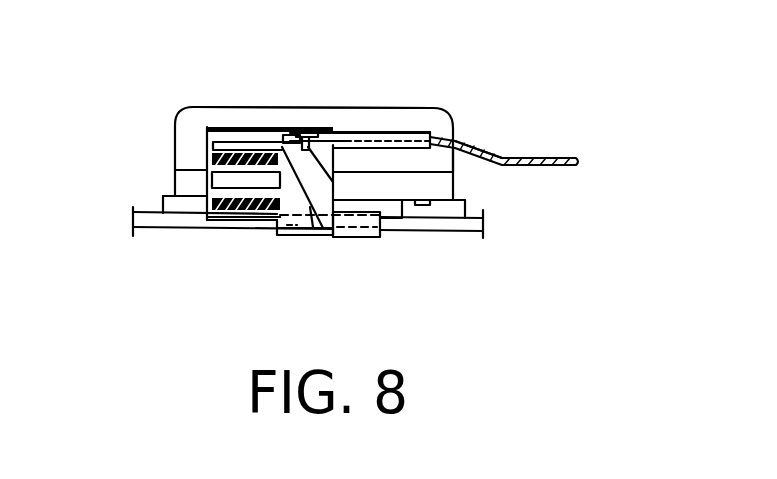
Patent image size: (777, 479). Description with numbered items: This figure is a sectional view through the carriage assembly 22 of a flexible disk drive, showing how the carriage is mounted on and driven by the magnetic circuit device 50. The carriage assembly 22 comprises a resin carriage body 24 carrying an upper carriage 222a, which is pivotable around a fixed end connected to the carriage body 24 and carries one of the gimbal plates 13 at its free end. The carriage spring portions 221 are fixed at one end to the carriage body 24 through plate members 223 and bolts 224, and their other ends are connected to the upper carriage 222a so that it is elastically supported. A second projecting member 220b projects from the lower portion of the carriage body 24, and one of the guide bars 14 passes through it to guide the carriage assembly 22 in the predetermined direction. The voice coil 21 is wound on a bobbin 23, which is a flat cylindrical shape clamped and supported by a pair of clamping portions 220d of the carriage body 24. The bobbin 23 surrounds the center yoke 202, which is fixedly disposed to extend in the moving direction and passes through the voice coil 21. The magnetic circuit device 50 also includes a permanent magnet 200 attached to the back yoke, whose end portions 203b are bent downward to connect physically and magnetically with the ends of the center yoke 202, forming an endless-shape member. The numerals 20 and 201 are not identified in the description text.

The gimbal plates 13 is at (543, 156).
The guide bars 14 is at (421, 231).
The head assembly 20 is at (266, 128).
The voice coil 21 is at (240, 222).
The carriage assembly 22 is at (300, 232).
The bobbin 23 is at (207, 178).
The carriage body 24 is at (315, 230).
The magnetic circuit device 50 is at (408, 88).
The permanent magnet 200 is at (226, 130).
The housing 201 is at (172, 160).
The center yoke 202 is at (398, 188).
The end portions 203b is at (190, 138).
The second projecting member 220b is at (323, 235).
The clamping portions 220d is at (232, 152).
The carriage spring portions 221 is at (338, 140).
The upper carriage 222a is at (470, 143).
The plate members 223 is at (282, 128).
The bolts 224 is at (305, 128).